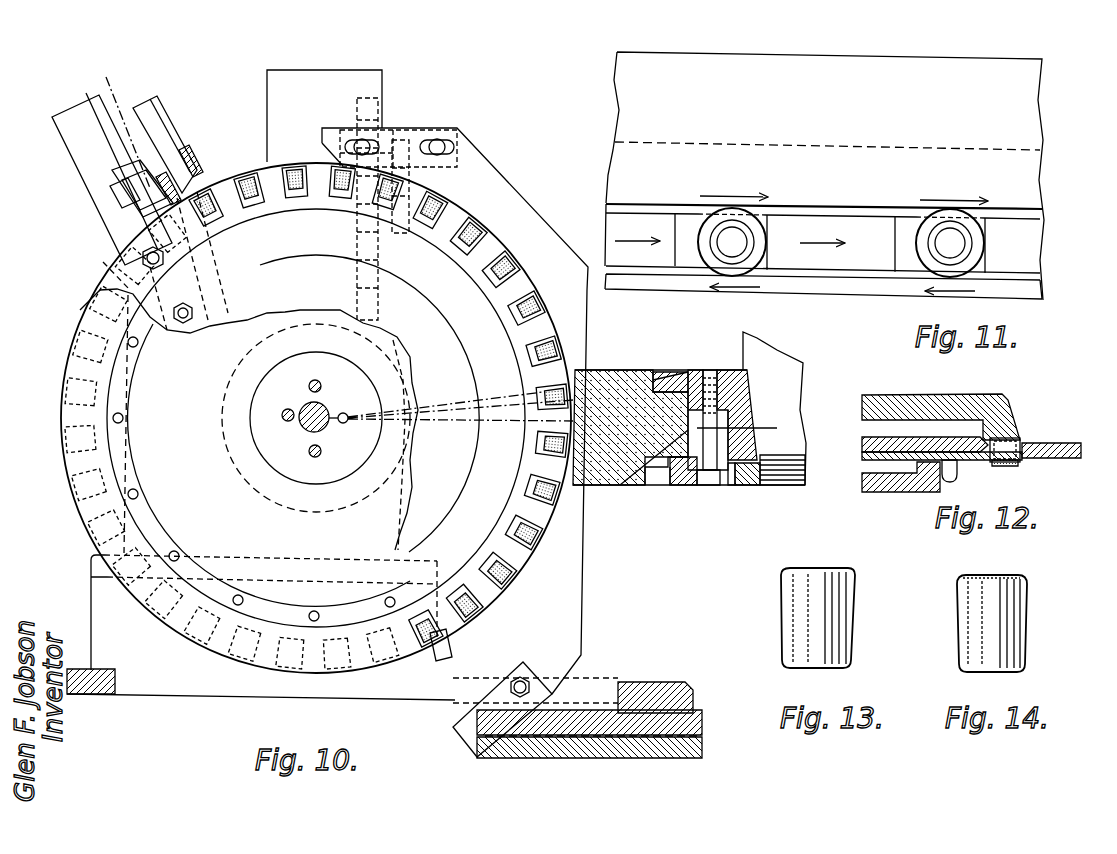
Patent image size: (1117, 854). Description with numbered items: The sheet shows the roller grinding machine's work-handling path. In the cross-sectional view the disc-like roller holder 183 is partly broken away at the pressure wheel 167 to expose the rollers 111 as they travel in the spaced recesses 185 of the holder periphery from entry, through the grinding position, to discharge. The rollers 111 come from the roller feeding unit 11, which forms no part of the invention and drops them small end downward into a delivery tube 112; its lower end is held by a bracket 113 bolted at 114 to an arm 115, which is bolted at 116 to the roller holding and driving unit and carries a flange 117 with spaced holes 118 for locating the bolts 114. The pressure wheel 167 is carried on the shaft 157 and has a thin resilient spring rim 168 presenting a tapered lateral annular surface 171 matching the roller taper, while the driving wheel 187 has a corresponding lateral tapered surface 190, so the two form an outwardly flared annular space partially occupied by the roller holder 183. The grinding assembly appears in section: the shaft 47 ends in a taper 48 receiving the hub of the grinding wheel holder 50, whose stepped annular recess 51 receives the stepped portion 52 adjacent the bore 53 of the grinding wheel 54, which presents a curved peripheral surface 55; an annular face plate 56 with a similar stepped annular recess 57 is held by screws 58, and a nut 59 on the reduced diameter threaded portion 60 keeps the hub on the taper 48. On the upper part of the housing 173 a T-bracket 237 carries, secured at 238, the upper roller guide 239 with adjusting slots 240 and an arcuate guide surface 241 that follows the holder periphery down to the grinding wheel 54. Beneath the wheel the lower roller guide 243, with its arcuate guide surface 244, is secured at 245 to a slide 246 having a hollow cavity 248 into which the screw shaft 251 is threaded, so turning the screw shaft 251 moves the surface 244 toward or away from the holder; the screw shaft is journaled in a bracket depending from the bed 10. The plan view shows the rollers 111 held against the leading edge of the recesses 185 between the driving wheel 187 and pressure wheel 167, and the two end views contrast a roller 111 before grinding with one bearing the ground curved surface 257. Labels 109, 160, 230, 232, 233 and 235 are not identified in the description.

In FIG. 10, the bed 10 is at (650, 682).
In FIG. 10, the roller feeding unit 11 is at (192, 138).
In FIG. 10, the shaft 47 is at (750, 336).
In FIG. 10, the taper 48 is at (746, 370).
In FIG. 10, the grinding wheel holder 50 is at (697, 376).
In FIG. 10, the stepped annular recess 51 is at (710, 375).
In FIG. 10, the stepped portion 52 is at (660, 380).
In FIG. 10, the bore 53 is at (640, 486).
In FIG. 10, the grinding wheel 54 is at (662, 374).
In FIG. 10, the curved peripheral surface 55 is at (580, 412).
In FIG. 10, the annular face plate 56 is at (678, 486).
In FIG. 10, the stepped annular recess 57 is at (655, 486).
In FIG. 10, the screws 58 is at (710, 486).
In FIG. 10, the nut 59 is at (750, 486).
In FIG. 10, the reduced diameter threaded portion 60 is at (780, 486).
In FIG. 10, the bolt hole 109 is at (128, 420).
In FIG. 10, the rollers 111 is at (212, 212).
In FIG. 11, the rollers 111 is at (700, 206).
In FIG. 12, the rollers 111 is at (1010, 466).
In FIG. 13, the rollers 111 is at (857, 628).
In FIG. 14, the rollers 111 is at (1024, 640).
In FIG. 10, the delivery tube 112 is at (165, 108).
In FIG. 10, the bracket 113 is at (196, 158).
In FIG. 10, the bolts 114 is at (108, 200).
In FIG. 10, the arm 115 is at (82, 172).
In FIG. 10, the bolts 116 is at (118, 252).
In FIG. 10, the flange 117 is at (86, 108).
In FIG. 10, the spaced holes 118 is at (127, 128).
In FIG. 10, the shaft 157 is at (308, 431).
In FIG. 10, the bolt 160 is at (318, 612).
In FIG. 12, the bolt 160 is at (945, 480).
In FIG. 10, the pressure wheel 167 is at (279, 430).
In FIG. 11, the pressure wheel 167 is at (823, 292).
In FIG. 12, the pressure wheel 167 is at (876, 493).
In FIG. 10, the thin resilient spring rim 168 is at (310, 385).
In FIG. 12, the thin resilient spring rim 168 is at (952, 483).
In FIG. 12, the tapered lateral annular surface 171 is at (980, 462).
In FIG. 10, the housing 173 is at (335, 70).
In FIG. 10, the roller holder 183 is at (240, 243).
In FIG. 11, the roller holder 183 is at (805, 252).
In FIG. 12, the roller holder 183 is at (862, 446).
In FIG. 10, the recesses 185 is at (224, 188).
In FIG. 11, the recesses 185 is at (692, 210).
In FIG. 11, the driving wheel 187 is at (628, 116).
In FIG. 12, the driving wheel 187 is at (941, 408).
In FIG. 12, the lateral tapered surface 190 is at (1008, 400).
In FIG. 10, the cover plate 230 is at (480, 160).
In FIG. 10, the holder lip 232 is at (494, 240).
In FIG. 10, the bolt 233 is at (360, 139).
In FIG. 10, the chain 235 is at (392, 243).
In FIG. 10, the T-bracket 237 is at (420, 152).
In FIG. 10, the fastening 238 is at (440, 139).
In FIG. 12, the upper roller guide 239 is at (1060, 443).
In FIG. 10, the slots 240 is at (377, 140).
In FIG. 10, the arcuate guide surface 241 is at (486, 232).
In FIG. 12, the arcuate guide surface 241 is at (1018, 438).
In FIG. 10, the lower roller guide 243 is at (582, 590).
In FIG. 10, the arcuate guide surface 244 is at (508, 590).
In FIG. 10, the fastening 245 is at (523, 668).
In FIG. 10, the slide 246 is at (545, 758).
In FIG. 10, the hollow cavity 248 is at (678, 760).
In FIG. 10, the screw shaft 251 is at (630, 760).
In FIG. 14, the curved surface 257 is at (992, 576).